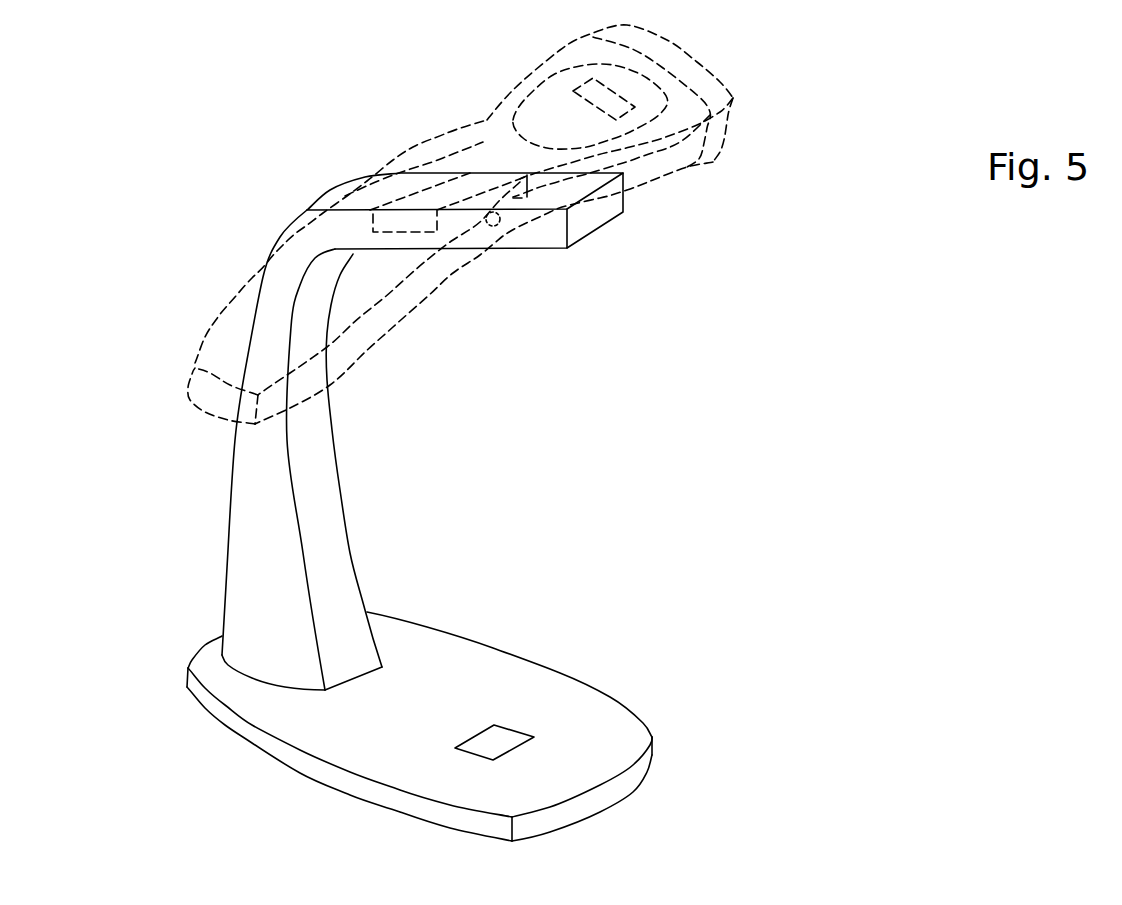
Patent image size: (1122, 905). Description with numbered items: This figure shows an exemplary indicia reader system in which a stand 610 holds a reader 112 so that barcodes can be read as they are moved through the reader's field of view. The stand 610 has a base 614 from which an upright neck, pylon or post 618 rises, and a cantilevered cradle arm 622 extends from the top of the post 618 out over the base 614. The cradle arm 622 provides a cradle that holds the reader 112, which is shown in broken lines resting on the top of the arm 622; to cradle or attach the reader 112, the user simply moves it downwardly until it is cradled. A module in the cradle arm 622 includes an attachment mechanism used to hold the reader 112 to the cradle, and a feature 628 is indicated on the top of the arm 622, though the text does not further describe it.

The reader 112 is at (494, 68).
The stand 610 is at (355, 153).
The base 614 is at (462, 775).
The upright neck, pylon or post 618 is at (332, 477).
The cantilevered cradle arm 622 is at (465, 200).
The slot 628 is at (451, 175).